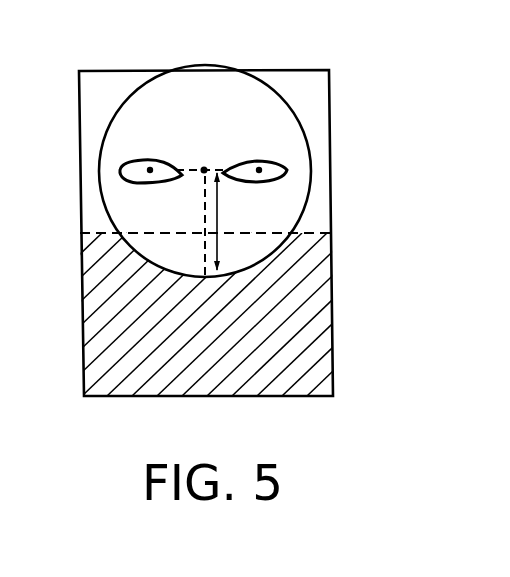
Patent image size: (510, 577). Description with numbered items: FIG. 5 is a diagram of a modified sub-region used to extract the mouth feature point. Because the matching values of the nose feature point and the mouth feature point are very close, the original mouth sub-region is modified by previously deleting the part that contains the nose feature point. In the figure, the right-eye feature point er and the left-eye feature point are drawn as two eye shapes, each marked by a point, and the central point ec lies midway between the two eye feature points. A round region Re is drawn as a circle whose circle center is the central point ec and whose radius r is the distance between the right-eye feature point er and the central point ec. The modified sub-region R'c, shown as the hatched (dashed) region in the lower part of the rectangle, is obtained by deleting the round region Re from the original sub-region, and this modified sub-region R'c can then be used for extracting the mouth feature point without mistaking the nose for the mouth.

The round region Re is at (205, 171).
The right-eye feature point er is at (150, 167).
The central point of two eye feature points ec is at (204, 167).
The radius r is at (224, 221).
The modified sub-region R'c is at (251, 314).